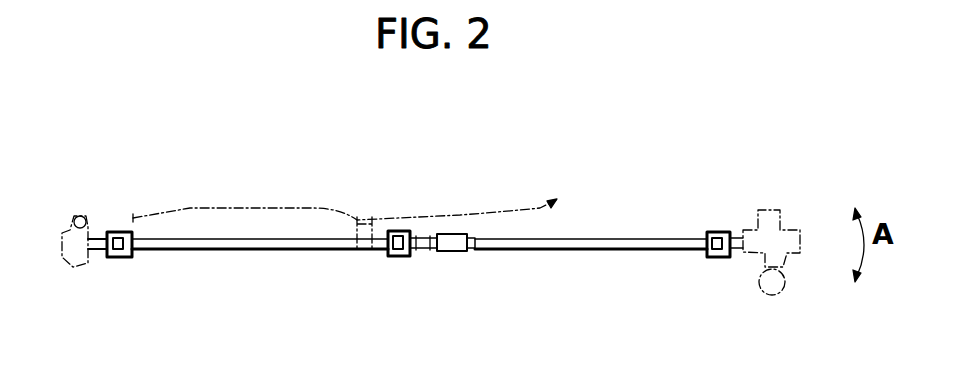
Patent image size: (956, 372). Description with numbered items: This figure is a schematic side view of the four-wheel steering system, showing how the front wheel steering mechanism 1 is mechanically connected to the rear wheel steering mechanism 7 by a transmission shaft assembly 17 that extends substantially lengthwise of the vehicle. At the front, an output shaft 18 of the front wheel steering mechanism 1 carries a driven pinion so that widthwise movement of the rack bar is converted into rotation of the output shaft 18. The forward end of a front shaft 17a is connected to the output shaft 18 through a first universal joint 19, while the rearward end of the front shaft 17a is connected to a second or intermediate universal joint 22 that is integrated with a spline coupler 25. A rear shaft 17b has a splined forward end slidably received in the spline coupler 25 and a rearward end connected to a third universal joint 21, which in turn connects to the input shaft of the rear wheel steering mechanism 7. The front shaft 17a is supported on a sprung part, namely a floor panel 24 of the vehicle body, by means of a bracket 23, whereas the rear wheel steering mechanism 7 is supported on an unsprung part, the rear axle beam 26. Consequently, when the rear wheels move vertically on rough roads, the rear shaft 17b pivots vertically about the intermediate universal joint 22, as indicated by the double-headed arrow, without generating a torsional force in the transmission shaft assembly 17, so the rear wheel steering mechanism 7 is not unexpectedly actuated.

The front wheel steering mechanism 1 is at (70, 230).
The rear wheel steering mechanism 7 is at (778, 198).
The transmission shaft assembly 17 is at (419, 287).
The front shaft 17a is at (227, 253).
The rear shaft 17b is at (600, 253).
The output shaft 18 is at (98, 237).
The first universal joint 19 is at (120, 257).
The third universal joint 21 is at (720, 231).
The second or intermediate universal joint 22 is at (400, 256).
The bracket 23 is at (357, 223).
The floor panel 24 is at (270, 208).
The spline coupler 25 is at (455, 251).
The rear axle beam 26 is at (780, 297).